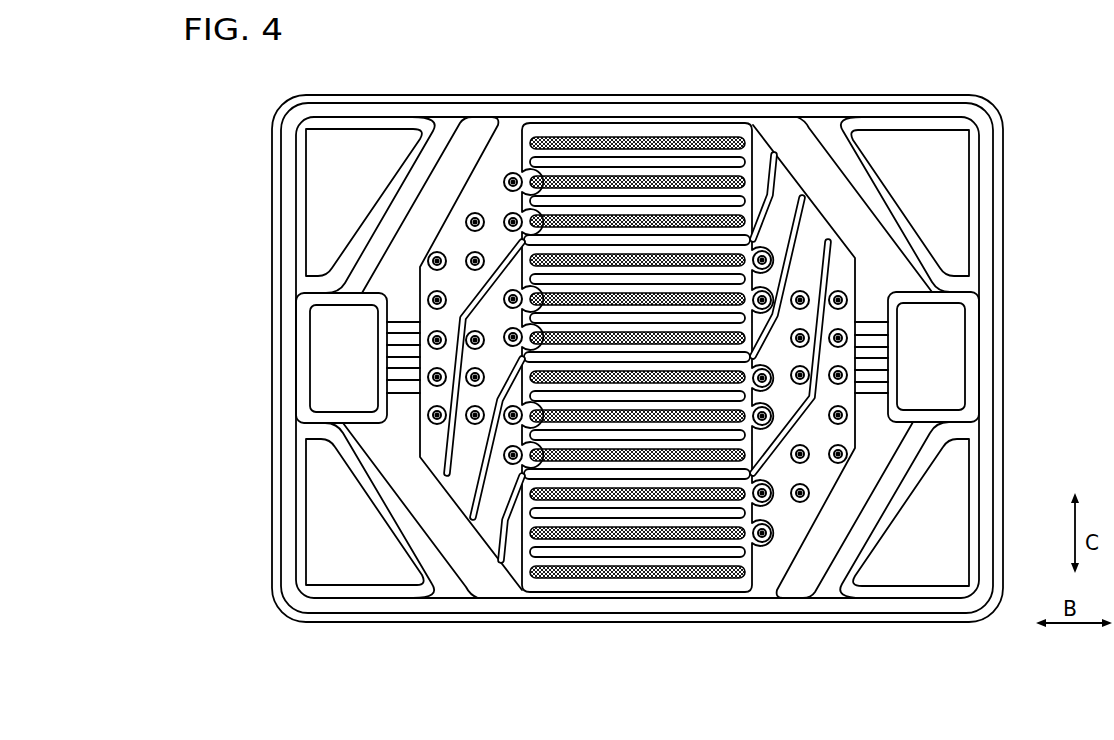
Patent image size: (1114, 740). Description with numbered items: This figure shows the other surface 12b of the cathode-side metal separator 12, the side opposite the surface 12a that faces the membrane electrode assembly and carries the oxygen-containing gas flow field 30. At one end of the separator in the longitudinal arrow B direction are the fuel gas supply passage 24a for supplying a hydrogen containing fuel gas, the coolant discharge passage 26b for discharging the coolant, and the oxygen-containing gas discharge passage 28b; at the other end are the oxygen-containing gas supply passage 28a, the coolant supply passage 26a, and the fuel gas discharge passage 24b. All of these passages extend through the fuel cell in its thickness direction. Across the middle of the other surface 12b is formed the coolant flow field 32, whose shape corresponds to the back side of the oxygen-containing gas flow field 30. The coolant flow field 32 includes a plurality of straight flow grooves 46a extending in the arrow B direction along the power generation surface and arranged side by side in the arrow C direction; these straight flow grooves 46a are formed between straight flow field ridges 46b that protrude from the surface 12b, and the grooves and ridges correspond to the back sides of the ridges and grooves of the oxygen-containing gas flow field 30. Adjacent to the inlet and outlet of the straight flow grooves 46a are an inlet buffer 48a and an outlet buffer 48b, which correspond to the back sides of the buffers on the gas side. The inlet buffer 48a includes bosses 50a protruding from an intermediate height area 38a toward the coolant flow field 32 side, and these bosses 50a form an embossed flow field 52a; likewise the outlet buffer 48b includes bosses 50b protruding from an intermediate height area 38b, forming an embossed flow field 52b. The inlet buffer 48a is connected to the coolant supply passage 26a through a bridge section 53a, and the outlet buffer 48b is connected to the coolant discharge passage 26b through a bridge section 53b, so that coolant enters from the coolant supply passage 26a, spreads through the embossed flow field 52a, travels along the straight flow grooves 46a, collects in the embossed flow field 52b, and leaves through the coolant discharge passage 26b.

The cathode-side metal separator 12 is at (247, 92).
The surface 12a is at (975, 621).
The other surface 12b is at (930, 613).
The fuel gas supply passage 24a is at (370, 205).
The fuel gas discharge passage 24b is at (904, 510).
The coolant supply passage 26a is at (942, 350).
The coolant discharge passage 26b is at (333, 345).
The oxygen-containing gas supply passage 28a is at (905, 204).
The oxygen-containing gas discharge passage 28b is at (370, 510).
The oxygen-containing gas flow field 30 is at (590, 152).
The coolant flow field 32 is at (640, 140).
The intermediate height area 38a is at (820, 215).
The intermediate height area 38b is at (455, 487).
The straight flow grooves 46a is at (562, 550).
The straight flow field ridges 46b is at (637, 577).
The inlet buffer 48a is at (762, 560).
The outlet buffer 48b is at (510, 158).
The bosses 50a is at (837, 290).
The bosses 50b is at (437, 415).
The embossed flow field 52a is at (820, 475).
The embossed flow field 52b is at (455, 245).
The bridge section 53a is at (876, 378).
The bridge section 53b is at (410, 327).